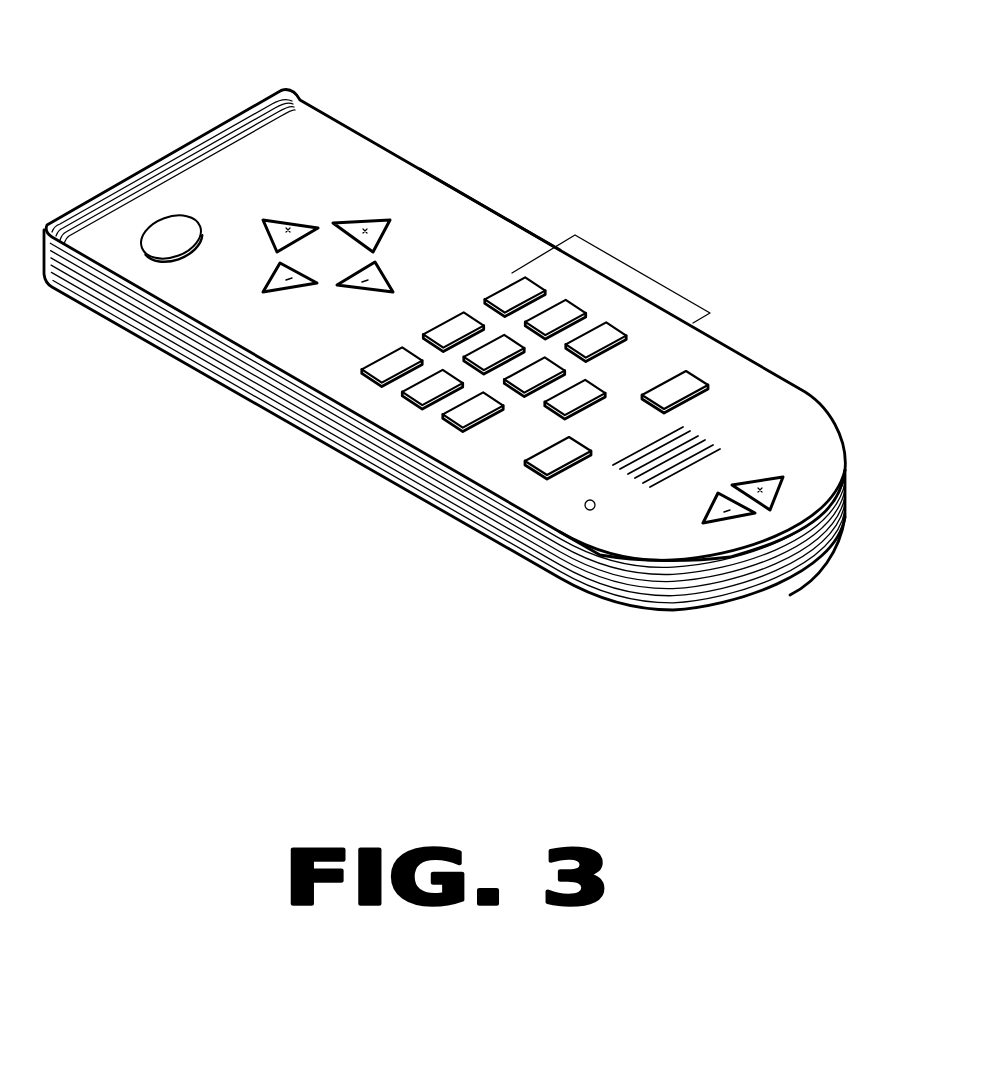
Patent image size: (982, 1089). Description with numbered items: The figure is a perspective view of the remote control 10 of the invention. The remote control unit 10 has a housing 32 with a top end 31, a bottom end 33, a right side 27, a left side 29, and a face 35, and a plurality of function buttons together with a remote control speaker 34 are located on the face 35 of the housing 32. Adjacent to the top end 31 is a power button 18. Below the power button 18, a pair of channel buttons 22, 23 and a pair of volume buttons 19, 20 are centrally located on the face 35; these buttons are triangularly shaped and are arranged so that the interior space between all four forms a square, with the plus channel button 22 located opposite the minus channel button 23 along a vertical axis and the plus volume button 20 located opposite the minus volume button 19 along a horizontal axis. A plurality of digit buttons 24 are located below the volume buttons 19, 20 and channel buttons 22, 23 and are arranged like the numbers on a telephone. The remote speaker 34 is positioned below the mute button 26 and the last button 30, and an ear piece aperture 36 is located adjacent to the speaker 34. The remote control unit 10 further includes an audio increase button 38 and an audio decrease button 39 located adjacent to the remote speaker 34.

The remote control 10 is at (648, 163).
The power button 18 is at (152, 258).
The minus volume button 19 is at (283, 293).
The plus volume button 20 is at (378, 220).
The plus channel button 22 is at (280, 218).
The minus channel button 23 is at (380, 262).
The digit buttons 24 is at (641, 275).
The mute button 26 is at (533, 470).
The right side 27 is at (500, 215).
The left side 29 is at (193, 373).
The last button 30 is at (697, 372).
The top end 31 is at (162, 152).
The housing 32 is at (318, 100).
The bottom end 33 is at (820, 565).
The remote control speaker 34 is at (652, 480).
The face 35 is at (450, 230).
The ear piece aperture 36 is at (585, 503).
The audio increase button 38 is at (780, 477).
The audio decrease button 39 is at (727, 523).